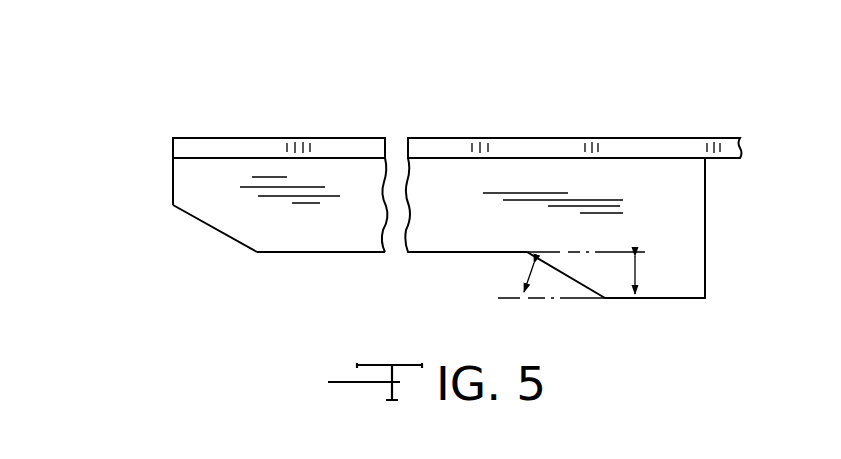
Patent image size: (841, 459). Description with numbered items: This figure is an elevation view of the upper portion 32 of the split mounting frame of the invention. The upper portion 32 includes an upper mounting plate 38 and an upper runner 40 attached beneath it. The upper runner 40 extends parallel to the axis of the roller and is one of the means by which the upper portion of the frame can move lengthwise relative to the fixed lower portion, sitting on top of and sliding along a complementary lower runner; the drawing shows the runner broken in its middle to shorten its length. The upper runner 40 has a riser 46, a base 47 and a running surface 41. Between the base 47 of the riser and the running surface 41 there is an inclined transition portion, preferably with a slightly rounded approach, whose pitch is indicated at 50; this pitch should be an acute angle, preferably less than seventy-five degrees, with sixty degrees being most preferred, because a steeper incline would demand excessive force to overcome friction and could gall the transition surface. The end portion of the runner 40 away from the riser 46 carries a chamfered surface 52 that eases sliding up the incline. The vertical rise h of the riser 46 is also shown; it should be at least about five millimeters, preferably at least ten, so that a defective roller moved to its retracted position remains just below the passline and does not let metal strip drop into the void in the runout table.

The upper portion 32 is at (454, 191).
The upper mounting plate 38 is at (172, 147).
The upper runner 40 is at (170, 182).
The running surface 41 is at (335, 254).
The riser 46 is at (502, 275).
The base 47 is at (690, 255).
The pitch of the transition portion 50 is at (528, 290).
The chamfered surface 52 is at (213, 228).
The riser height h is at (637, 272).